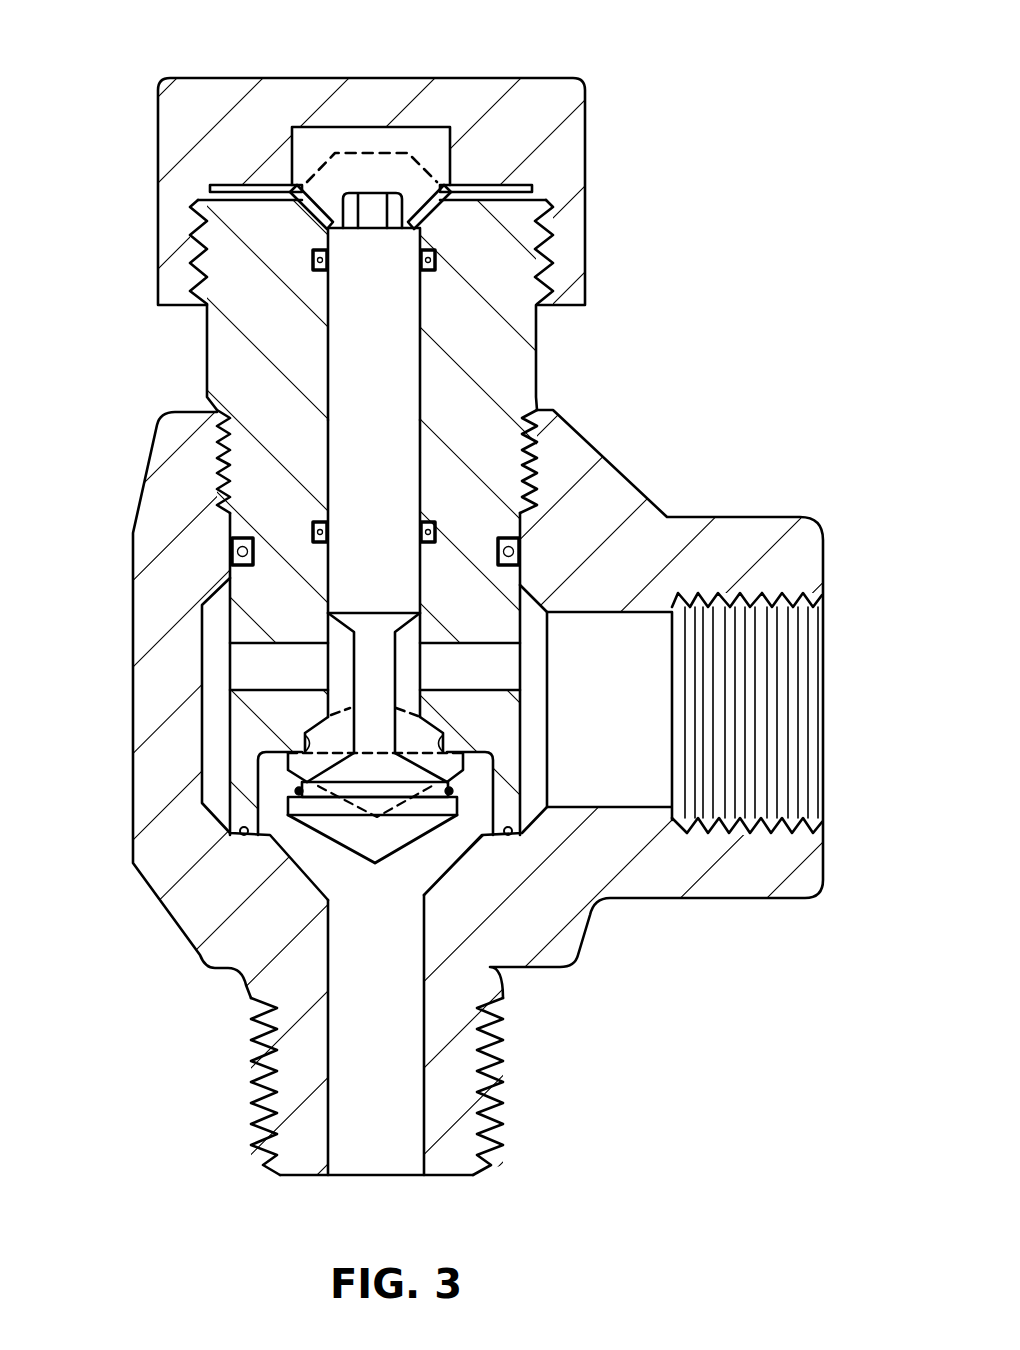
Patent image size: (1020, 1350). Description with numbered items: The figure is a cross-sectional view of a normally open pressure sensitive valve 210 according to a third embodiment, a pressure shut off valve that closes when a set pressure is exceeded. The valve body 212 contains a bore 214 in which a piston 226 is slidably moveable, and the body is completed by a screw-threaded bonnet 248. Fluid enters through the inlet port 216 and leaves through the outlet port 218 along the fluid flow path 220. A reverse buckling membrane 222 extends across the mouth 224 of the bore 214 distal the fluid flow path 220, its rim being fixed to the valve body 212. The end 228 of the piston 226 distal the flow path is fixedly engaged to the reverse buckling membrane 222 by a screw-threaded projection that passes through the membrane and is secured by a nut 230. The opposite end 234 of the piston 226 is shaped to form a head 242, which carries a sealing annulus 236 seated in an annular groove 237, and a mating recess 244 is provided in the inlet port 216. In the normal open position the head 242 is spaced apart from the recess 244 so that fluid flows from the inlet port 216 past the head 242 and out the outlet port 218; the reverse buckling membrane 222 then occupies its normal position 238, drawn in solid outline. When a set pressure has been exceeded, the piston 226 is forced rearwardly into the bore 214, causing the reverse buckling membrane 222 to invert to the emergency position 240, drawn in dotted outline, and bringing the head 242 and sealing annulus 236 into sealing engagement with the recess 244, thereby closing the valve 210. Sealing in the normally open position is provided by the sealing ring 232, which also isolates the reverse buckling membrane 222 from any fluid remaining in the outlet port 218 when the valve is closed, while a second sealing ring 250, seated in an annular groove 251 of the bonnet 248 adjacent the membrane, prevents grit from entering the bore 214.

The pressure sensitive valve 210 is at (762, 340).
The valve body 212 is at (600, 513).
The bore 214 is at (323, 380).
The inlet port 216 is at (410, 996).
The outlet port 218 is at (637, 749).
The fluid flow path 220 is at (360, 1075).
The reverse buckling membrane 222 is at (323, 230).
The mouth 224 is at (330, 230).
The piston 226 is at (373, 455).
The end of piston 228 is at (375, 265).
The nut 230 is at (368, 210).
The sealing ring 232 is at (437, 520).
The end of piston 234 is at (367, 588).
The sealing annulus 236 is at (307, 787).
The annular groove 237 is at (293, 797).
The normal position 238 is at (438, 195).
The emergency position 240 is at (412, 160).
The head 242 is at (342, 828).
The mating recess 244 is at (307, 735).
The bonnet 248 is at (497, 373).
The second sealing ring 250 is at (315, 258).
The annular groove 251 is at (330, 268).